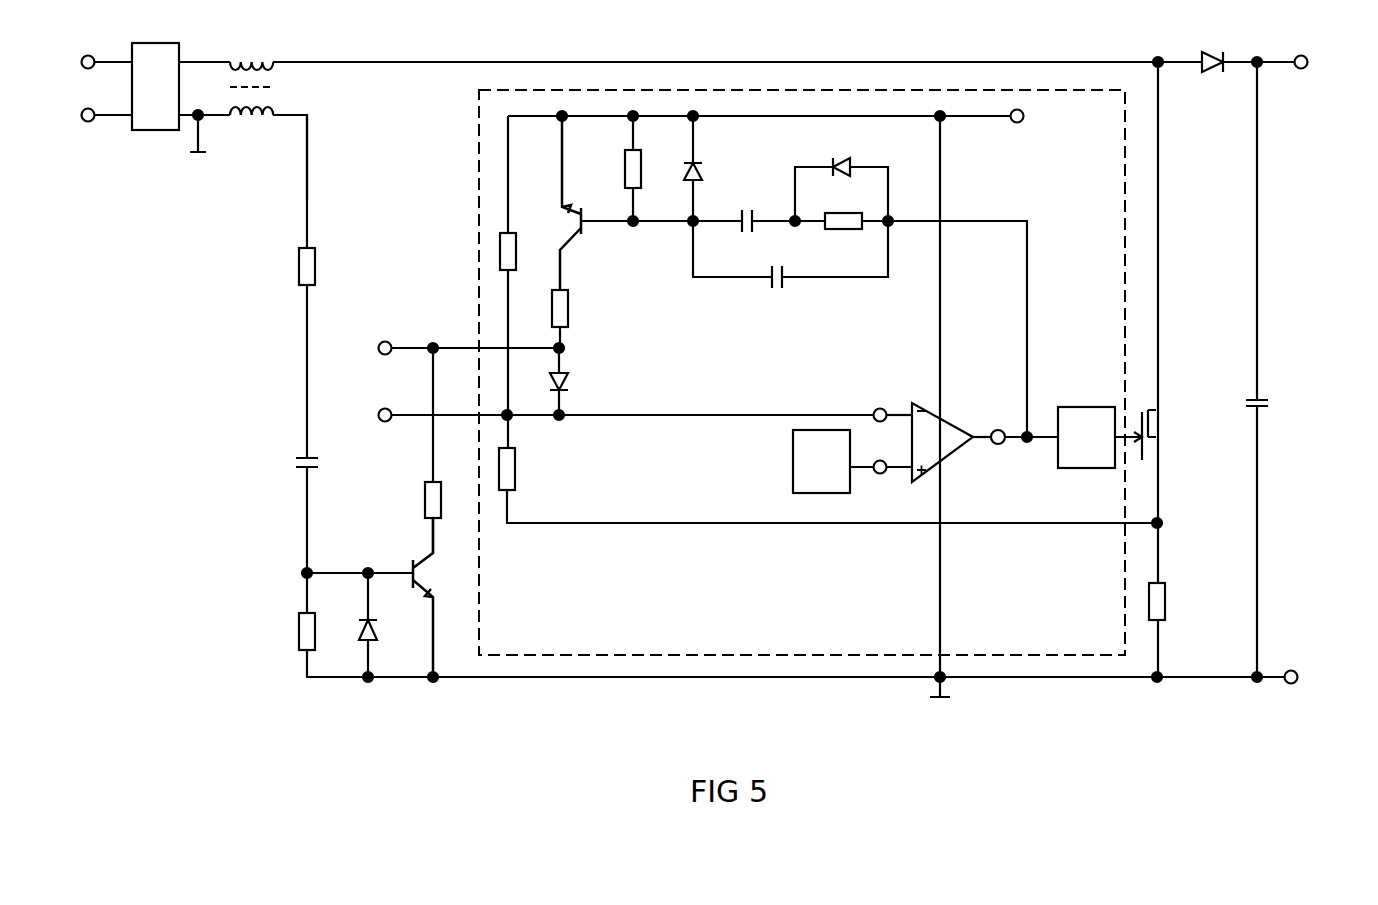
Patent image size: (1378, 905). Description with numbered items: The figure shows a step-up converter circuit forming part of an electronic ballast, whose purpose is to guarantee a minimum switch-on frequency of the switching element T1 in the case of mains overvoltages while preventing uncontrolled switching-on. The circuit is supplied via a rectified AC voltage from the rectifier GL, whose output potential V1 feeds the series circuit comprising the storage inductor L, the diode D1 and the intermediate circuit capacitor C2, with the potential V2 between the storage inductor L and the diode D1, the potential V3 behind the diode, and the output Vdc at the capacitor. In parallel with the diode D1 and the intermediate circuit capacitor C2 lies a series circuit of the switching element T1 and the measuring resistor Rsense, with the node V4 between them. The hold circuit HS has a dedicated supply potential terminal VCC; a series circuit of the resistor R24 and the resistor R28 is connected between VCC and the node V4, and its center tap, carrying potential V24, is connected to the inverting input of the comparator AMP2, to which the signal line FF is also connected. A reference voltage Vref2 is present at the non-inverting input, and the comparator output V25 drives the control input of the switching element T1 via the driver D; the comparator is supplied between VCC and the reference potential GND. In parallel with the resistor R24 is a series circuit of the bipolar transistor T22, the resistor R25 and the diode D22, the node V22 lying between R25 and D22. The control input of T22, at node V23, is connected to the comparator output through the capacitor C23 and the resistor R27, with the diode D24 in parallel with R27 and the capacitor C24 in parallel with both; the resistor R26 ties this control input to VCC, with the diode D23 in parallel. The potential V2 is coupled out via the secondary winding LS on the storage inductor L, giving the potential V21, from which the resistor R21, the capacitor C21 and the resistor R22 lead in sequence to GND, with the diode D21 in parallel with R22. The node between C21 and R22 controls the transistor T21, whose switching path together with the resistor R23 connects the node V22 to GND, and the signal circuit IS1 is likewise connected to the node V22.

The rectified AC voltage AC is at (79, 89).
The rectifier bridge GL is at (155, 74).
The rectified voltage node V1 is at (204, 49).
The storage inductor L is at (251, 53).
The secondary winding LS is at (251, 120).
The auxiliary winding voltage node V21 is at (315, 150).
The resistor R21 is at (330, 266).
The capacitor C21 is at (283, 466).
The resistor R22 is at (287, 631).
The diode D21 is at (396, 625).
The transistor T21 is at (403, 597).
The resistor R23 is at (410, 450).
The signal circuit IS1 is at (447, 348).
The signal line FF is at (607, 415).
The hold circuit HS is at (802, 372).
The supply potential terminal VCC is at (790, 116).
The resistor R24 is at (529, 255).
The resistor R28 is at (530, 469).
The bipolar transistor T22 is at (577, 203).
The resistor R25 is at (582, 319).
The node V22 is at (585, 354).
The diode D22 is at (584, 392).
The resistor R26 is at (610, 168).
The voltage node V23 is at (678, 236).
The diode D23 is at (718, 168).
The capacitor C23 is at (761, 233).
The capacitor C24 is at (790, 269).
The diode D24 is at (841, 177).
The resistor R27 is at (911, 310).
The comparator input voltage node V24 is at (866, 401).
The reference voltage Vref2 is at (852, 461).
The comparator AMP2 is at (958, 442).
The comparator output voltage node V25 is at (1031, 458).
The driver D is at (1086, 437).
The switching element T1 is at (1154, 434).
The potential V2 is at (1155, 351).
The diode D1 is at (1213, 46).
The output voltage node V3 is at (1254, 352).
The DC output terminal Vdc is at (1324, 62).
The intermediate circuit capacitor C2 is at (1276, 403).
The node V4 is at (1174, 523).
The measuring resistor Rsense is at (1184, 601).
The reference potential GND is at (1320, 678).